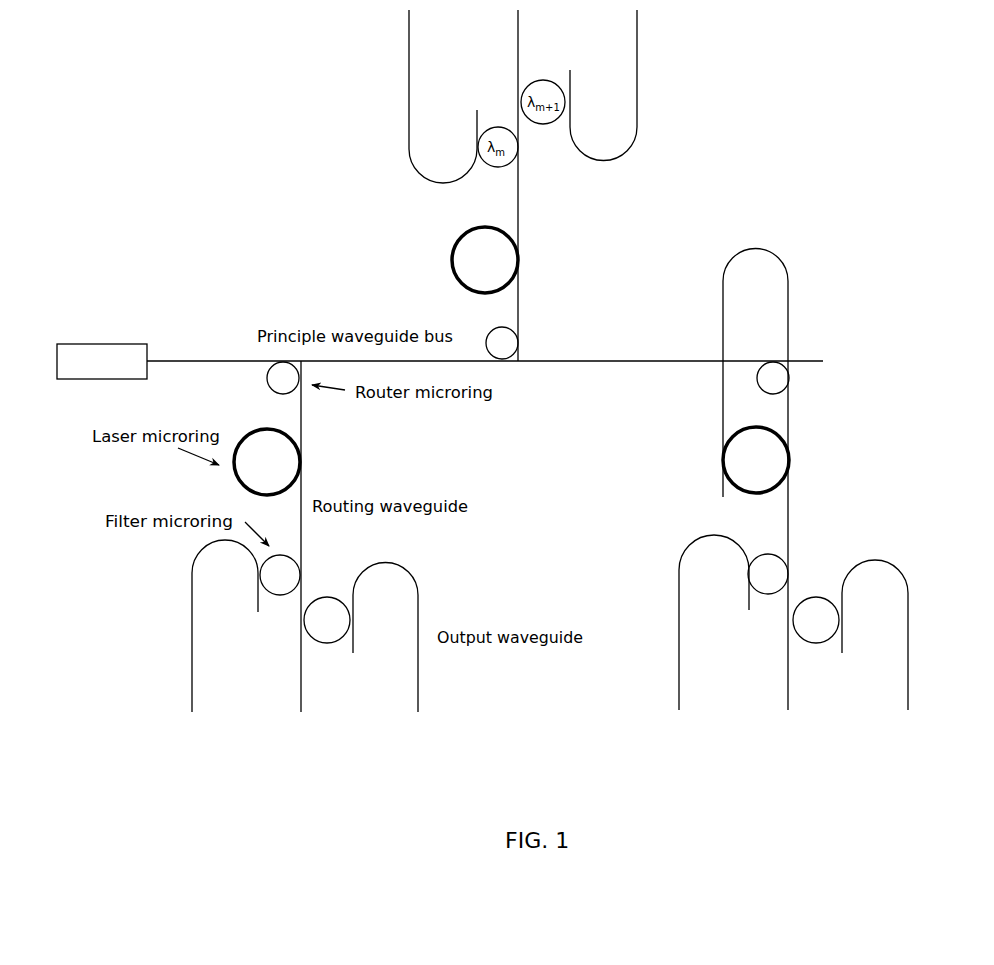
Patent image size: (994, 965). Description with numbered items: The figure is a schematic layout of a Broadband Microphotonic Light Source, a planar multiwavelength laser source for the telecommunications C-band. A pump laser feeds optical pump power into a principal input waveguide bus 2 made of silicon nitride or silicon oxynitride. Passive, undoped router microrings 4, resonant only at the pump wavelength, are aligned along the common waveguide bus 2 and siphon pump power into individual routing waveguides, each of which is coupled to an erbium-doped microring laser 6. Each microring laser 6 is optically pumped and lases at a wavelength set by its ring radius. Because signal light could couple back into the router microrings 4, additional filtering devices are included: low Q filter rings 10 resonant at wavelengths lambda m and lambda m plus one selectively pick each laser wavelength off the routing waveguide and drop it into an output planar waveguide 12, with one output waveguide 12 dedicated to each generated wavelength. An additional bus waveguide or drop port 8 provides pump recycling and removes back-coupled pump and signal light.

The principal input waveguide bus 2 is at (185, 358).
The router microring 4 is at (490, 335).
The microring laser 6 is at (724, 492).
The drop port 8 is at (191, 682).
The filtering ring 10 is at (283, 597).
The output planar waveguide 12 is at (424, 690).